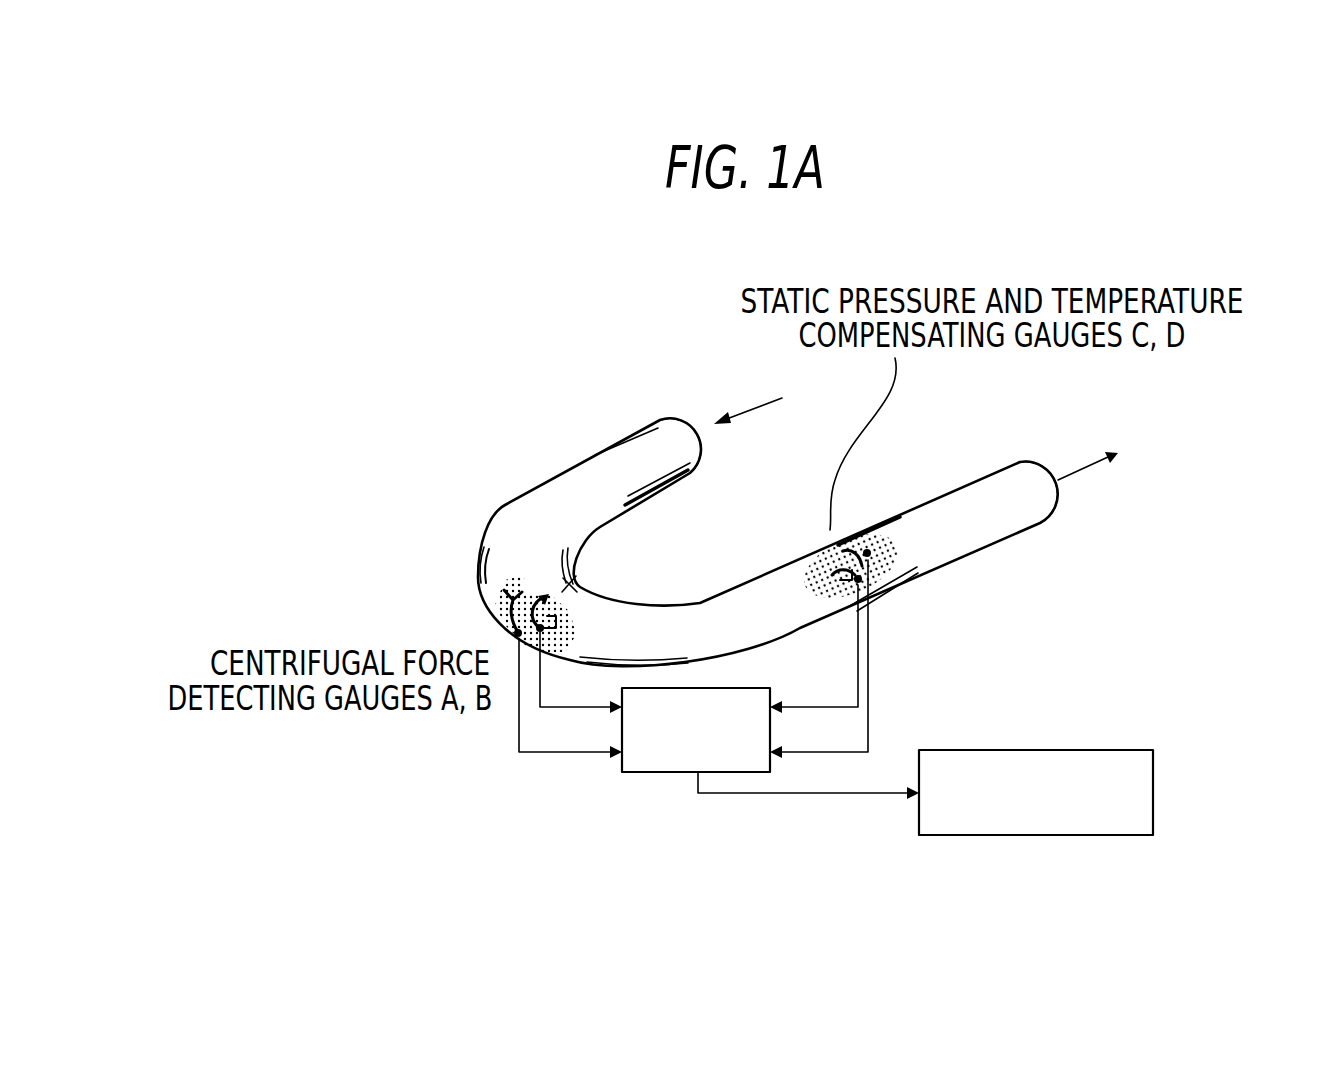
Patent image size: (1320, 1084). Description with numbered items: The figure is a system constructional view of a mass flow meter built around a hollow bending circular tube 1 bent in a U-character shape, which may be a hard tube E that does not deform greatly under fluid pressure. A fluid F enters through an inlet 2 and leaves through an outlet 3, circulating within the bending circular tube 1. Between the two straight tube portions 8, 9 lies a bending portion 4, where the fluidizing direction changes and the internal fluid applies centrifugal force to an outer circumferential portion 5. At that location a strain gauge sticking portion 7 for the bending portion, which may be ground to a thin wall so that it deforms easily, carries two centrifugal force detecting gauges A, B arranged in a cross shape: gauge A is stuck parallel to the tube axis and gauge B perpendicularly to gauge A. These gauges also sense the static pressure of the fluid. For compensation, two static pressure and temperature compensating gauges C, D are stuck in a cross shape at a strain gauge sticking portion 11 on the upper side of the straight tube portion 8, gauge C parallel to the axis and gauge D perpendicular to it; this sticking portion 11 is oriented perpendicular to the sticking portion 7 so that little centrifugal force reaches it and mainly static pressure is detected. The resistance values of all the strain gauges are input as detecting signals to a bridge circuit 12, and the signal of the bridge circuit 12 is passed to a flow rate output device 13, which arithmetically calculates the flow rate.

The bending circular tube 1 is at (505, 498).
The inlet 2 is at (697, 422).
The outlet 3 is at (1052, 467).
The bending portion 4 is at (575, 577).
The outer circumferential portion 5 is at (476, 586).
The strain gauge sticking portion for the bending portion 7 is at (486, 607).
The straight tube portion 8 is at (980, 492).
The straight tube portion 9 is at (648, 452).
The strain gauge sticking portion for the straight tube portion 11 is at (908, 554).
The bridge circuit 12 is at (764, 684).
The flow rate output device 13 is at (1040, 750).
The centrifugal force detecting gauge A is at (505, 604).
The centrifugal force detecting gauge B is at (541, 599).
The static pressure and temperature compensating gauge C is at (836, 582).
The static pressure and temperature compensating gauge D is at (845, 547).
The hard tube E is at (633, 484).
The fluid F is at (928, 430).